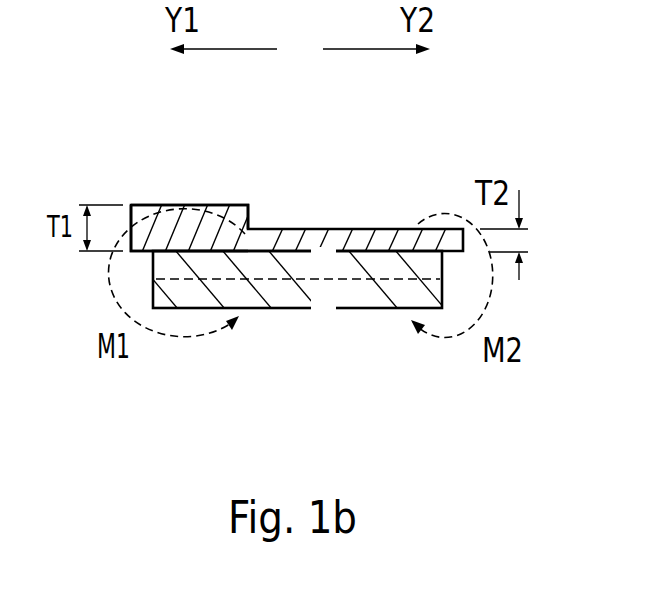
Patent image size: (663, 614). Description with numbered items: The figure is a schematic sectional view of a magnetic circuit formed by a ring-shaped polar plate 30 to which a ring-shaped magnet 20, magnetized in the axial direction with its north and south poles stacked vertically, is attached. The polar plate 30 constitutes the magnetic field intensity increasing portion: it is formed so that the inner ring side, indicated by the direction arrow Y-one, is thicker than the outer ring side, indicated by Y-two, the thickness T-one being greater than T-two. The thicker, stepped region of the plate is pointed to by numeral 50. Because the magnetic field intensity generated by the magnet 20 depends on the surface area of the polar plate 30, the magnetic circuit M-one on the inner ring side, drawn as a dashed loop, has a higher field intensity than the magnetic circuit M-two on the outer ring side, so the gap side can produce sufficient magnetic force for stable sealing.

The magnet 20 is at (378, 300).
The ring-shaped polar plate 30 is at (220, 204).
The protruding portion of plate 50 is at (177, 192).